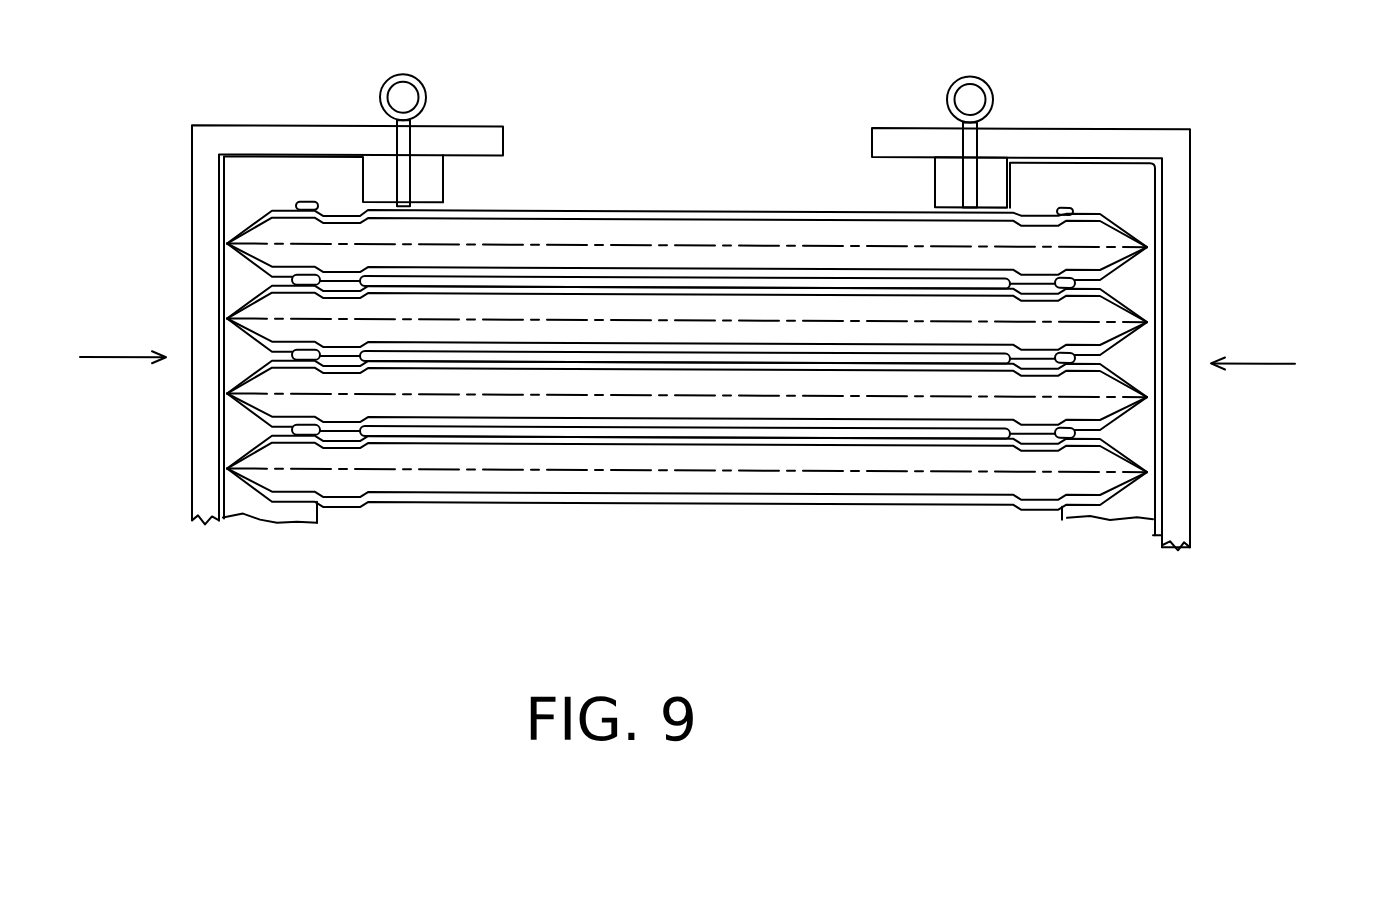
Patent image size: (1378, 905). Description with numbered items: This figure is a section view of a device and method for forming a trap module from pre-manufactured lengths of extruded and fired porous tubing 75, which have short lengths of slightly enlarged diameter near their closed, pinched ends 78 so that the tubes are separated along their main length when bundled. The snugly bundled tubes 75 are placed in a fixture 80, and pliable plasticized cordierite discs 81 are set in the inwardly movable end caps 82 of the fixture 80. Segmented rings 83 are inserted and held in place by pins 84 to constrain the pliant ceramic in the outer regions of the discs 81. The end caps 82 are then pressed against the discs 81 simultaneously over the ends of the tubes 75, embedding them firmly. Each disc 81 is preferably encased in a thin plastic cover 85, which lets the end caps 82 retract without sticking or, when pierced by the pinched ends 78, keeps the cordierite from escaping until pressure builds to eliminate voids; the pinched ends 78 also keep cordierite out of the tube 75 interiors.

The porous tubing 75 is at (642, 212).
The pinched ends 78 is at (1123, 490).
The fixture 80 is at (678, 190).
The plasticized cordierite discs 81 is at (1135, 207).
The end caps 82 is at (1190, 127).
The segmented rings 83 is at (935, 186).
The pins 84 is at (987, 78).
The plastic cover 85 is at (1160, 450).